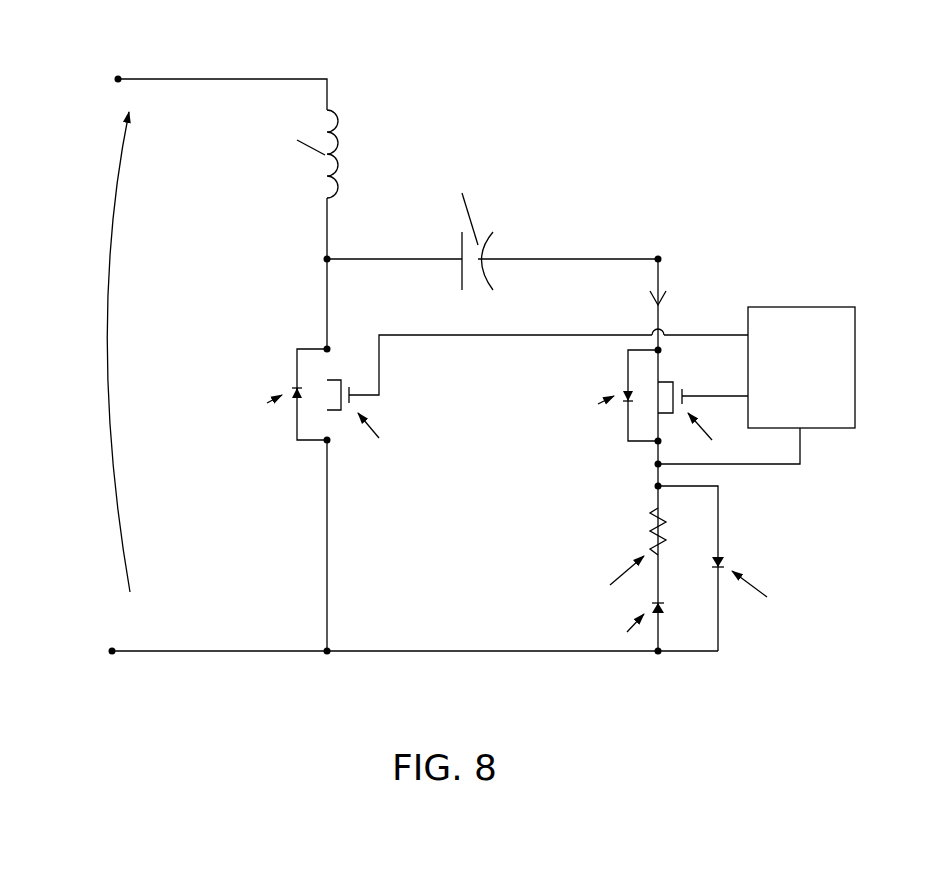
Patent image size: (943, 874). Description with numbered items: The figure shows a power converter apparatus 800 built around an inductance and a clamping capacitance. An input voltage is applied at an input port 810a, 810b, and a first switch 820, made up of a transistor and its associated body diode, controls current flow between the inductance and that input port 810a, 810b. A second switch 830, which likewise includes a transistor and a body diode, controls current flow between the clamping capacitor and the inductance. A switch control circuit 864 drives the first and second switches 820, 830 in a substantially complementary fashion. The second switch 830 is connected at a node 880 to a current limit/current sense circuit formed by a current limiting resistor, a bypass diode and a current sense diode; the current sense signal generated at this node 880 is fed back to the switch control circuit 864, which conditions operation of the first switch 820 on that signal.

The converter apparatus 800 is at (688, 157).
The input port 810a is at (115, 77).
The input port 810b is at (107, 655).
The first switch 820 is at (235, 342).
The second switch 830 is at (598, 442).
The switch control circuit 864 is at (802, 305).
The node 880 is at (644, 472).